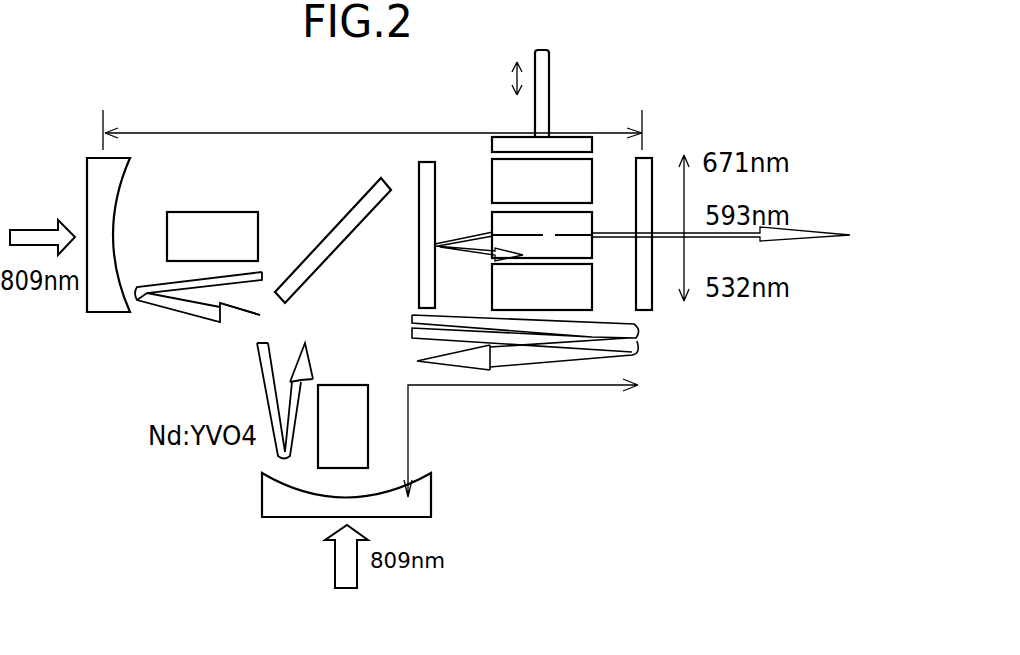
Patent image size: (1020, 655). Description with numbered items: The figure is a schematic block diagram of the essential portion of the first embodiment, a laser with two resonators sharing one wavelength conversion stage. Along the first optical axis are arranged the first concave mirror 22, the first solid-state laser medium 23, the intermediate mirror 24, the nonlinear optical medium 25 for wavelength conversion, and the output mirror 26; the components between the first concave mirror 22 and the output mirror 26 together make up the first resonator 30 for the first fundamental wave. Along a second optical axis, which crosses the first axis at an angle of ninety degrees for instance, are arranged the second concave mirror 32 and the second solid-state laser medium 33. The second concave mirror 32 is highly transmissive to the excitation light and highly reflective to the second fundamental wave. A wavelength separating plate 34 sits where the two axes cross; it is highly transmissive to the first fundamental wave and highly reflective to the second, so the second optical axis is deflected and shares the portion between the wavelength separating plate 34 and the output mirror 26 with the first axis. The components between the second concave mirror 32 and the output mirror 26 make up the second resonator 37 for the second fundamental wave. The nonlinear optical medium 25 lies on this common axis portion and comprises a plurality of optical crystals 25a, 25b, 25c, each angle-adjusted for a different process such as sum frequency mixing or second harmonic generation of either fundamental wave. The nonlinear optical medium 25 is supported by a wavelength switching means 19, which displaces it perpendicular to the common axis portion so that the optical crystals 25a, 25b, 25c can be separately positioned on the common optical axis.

The wavelength switching means 19 is at (535, 106).
The first concave mirror 22 is at (92, 157).
The first solid-state laser medium 23 is at (259, 228).
The intermediate mirror 24 is at (422, 161).
The nonlinear optical medium 25 is at (551, 216).
The optical crystal for wavelength conversion 25a is at (597, 293).
The optical crystal for wavelength conversion 25b is at (594, 215).
The optical crystal for wavelength conversion 25c is at (594, 168).
The output mirror 26 is at (653, 316).
The first resonator 30 is at (268, 145).
The second concave mirror 32 is at (262, 497).
The second solid-state laser medium 33 is at (369, 423).
The wavelength separating plate 34 is at (336, 256).
The second resonator 37 is at (457, 467).